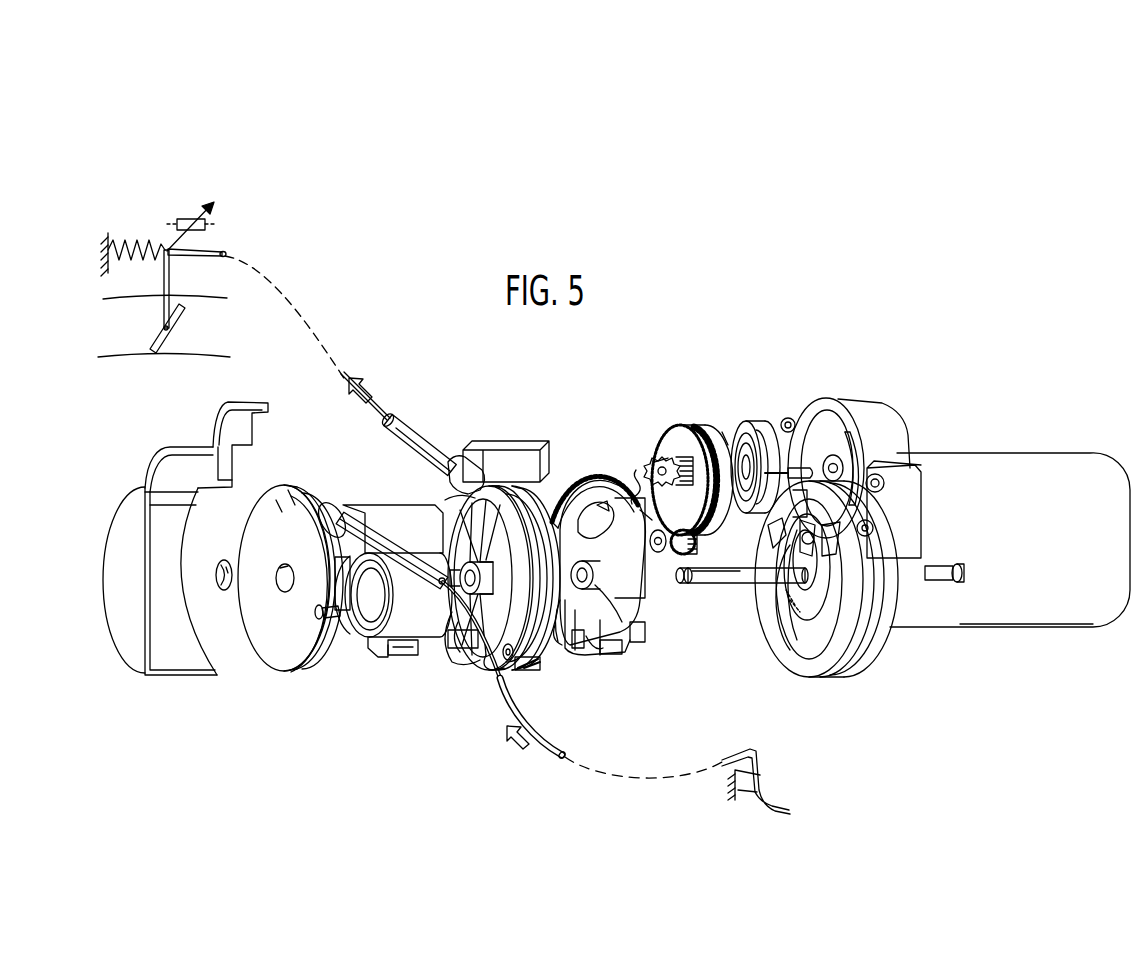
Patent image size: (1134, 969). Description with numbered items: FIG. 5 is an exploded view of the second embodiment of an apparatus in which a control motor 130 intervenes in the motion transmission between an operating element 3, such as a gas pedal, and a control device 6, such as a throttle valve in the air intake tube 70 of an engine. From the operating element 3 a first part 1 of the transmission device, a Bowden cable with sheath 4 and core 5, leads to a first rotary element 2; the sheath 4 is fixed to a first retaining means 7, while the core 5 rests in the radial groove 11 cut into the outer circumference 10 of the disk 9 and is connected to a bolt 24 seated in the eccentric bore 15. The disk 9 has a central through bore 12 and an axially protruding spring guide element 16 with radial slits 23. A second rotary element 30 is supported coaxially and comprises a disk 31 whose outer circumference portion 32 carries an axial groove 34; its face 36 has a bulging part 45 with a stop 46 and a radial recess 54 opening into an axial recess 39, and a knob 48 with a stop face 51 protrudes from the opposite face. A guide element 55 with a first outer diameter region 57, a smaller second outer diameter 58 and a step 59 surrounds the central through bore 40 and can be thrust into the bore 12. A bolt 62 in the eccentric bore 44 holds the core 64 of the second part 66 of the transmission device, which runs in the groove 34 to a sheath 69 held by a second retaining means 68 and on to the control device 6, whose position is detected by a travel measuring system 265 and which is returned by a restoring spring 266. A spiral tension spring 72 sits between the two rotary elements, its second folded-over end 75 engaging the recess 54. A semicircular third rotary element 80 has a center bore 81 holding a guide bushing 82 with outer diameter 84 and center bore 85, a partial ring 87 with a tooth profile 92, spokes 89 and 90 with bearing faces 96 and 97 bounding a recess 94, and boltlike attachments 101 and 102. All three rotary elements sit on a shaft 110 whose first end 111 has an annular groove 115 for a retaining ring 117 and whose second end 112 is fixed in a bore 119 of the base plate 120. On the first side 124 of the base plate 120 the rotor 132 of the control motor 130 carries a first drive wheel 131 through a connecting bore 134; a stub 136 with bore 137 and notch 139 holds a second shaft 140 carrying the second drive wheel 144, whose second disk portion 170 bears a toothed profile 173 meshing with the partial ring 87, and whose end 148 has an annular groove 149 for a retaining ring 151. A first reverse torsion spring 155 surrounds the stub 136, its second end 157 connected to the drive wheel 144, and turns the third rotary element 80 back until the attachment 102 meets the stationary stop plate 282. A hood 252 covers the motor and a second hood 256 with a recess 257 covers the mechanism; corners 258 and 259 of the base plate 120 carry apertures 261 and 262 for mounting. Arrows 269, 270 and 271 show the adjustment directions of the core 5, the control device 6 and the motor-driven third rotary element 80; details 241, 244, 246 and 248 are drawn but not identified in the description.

The first part of the transmission device 1 is at (392, 570).
The first rotary element 2 is at (293, 670).
The operating element 3 is at (778, 800).
The Bowden cable sheath 4 is at (375, 552).
The Bowden cable core 5 is at (538, 738).
The control device 6 is at (168, 336).
The first retaining means 7 is at (385, 503).
The disk 9 is at (280, 500).
The outer circumference 10 is at (303, 487).
The radial groove 11 is at (330, 500).
The central through bore 12 is at (278, 570).
The eccentric bore 15 is at (330, 613).
The spring guide element 16 is at (360, 632).
The radial slits 23 is at (340, 562).
The bolt 24 is at (316, 610).
The second rotary element 30 is at (461, 680).
The disk 31 is at (505, 490).
The outer circumference portion 32 is at (538, 498).
The axial groove 34 is at (522, 495).
The face 36 is at (458, 500).
The axial recess 39 is at (450, 505).
The central through bore 40 is at (447, 570).
The eccentric bore 44 is at (527, 665).
The bulging part 45 is at (452, 668).
The stop 46 is at (495, 670).
The knob 48 is at (551, 505).
The stop face 51 is at (558, 520).
The radial recess 54 is at (452, 650).
The guide element 55 is at (447, 590).
The first outer diameter region 57 is at (508, 555).
The second outer diameter 58 is at (466, 554).
The step 59 is at (482, 556).
The bolt 62 is at (510, 665).
The Bowden cable core 64 is at (364, 413).
The second part of the transmission device 66 is at (394, 427).
The second retaining means 68 is at (476, 458).
The Bowden cable sheath 69 is at (418, 442).
The air intake tube 70 is at (200, 302).
The tension spring 72 is at (372, 640).
The second folded-over end 75 is at (400, 658).
The third rotary element 80 is at (617, 656).
The center bore 81 is at (597, 582).
The guide bushing 82 is at (645, 635).
The outer diameter 84 is at (600, 648).
The center bore 85 is at (618, 608).
The partial ring 87 is at (584, 478).
The spoke 89 is at (658, 530).
The spoke 90 is at (580, 645).
The tooth profile 92 is at (562, 645).
The recess 94 is at (648, 504).
The bearing face 96 is at (612, 507).
The bearing face 97 is at (570, 640).
The boltlike attachment 101 is at (640, 578).
The boltlike attachment 102 is at (615, 652).
The shaft 110 is at (738, 590).
The first end 111 is at (685, 586).
The second end 112 is at (790, 607).
The annular groove 115 is at (690, 596).
The retaining ring 117 is at (219, 585).
The bore 119 is at (818, 580).
The base plate 120 is at (838, 680).
The first side 124 is at (808, 636).
The control motor 130 is at (1015, 553).
The first drive wheel 131 is at (696, 548).
The rotor 132 is at (822, 537).
The connecting bore 134 is at (830, 570).
The stub 136 is at (858, 440).
The bore 137 is at (860, 470).
The notch 139 is at (846, 468).
The second shaft 140 is at (843, 400).
The second drive wheel 144 is at (690, 428).
The end 148 is at (722, 430).
The annular groove 149 is at (742, 428).
The retaining ring 151 is at (636, 470).
The first reverse torsion spring 155 is at (748, 421).
The second end 157 is at (772, 430).
The second disk portion 170 is at (656, 462).
The toothed profile 173 is at (676, 445).
The groove 241 is at (798, 625).
The rim 244 is at (845, 650).
The motor shaft 246 is at (958, 526).
The hole 248 is at (874, 530).
The hood 252 is at (1028, 626).
The second hood 256 is at (170, 676).
The recess 257 is at (205, 490).
The corner 258 is at (922, 480).
The corner 259 is at (798, 420).
The aperture 261 is at (884, 485).
The aperture 262 is at (789, 418).
The travel measuring system 265 is at (183, 218).
The restoring spring 266 is at (148, 247).
The arrow 269 is at (513, 734).
The arrow 270 is at (371, 393).
The arrow 271 is at (593, 495).
The stationary stop plate 282 is at (768, 522).